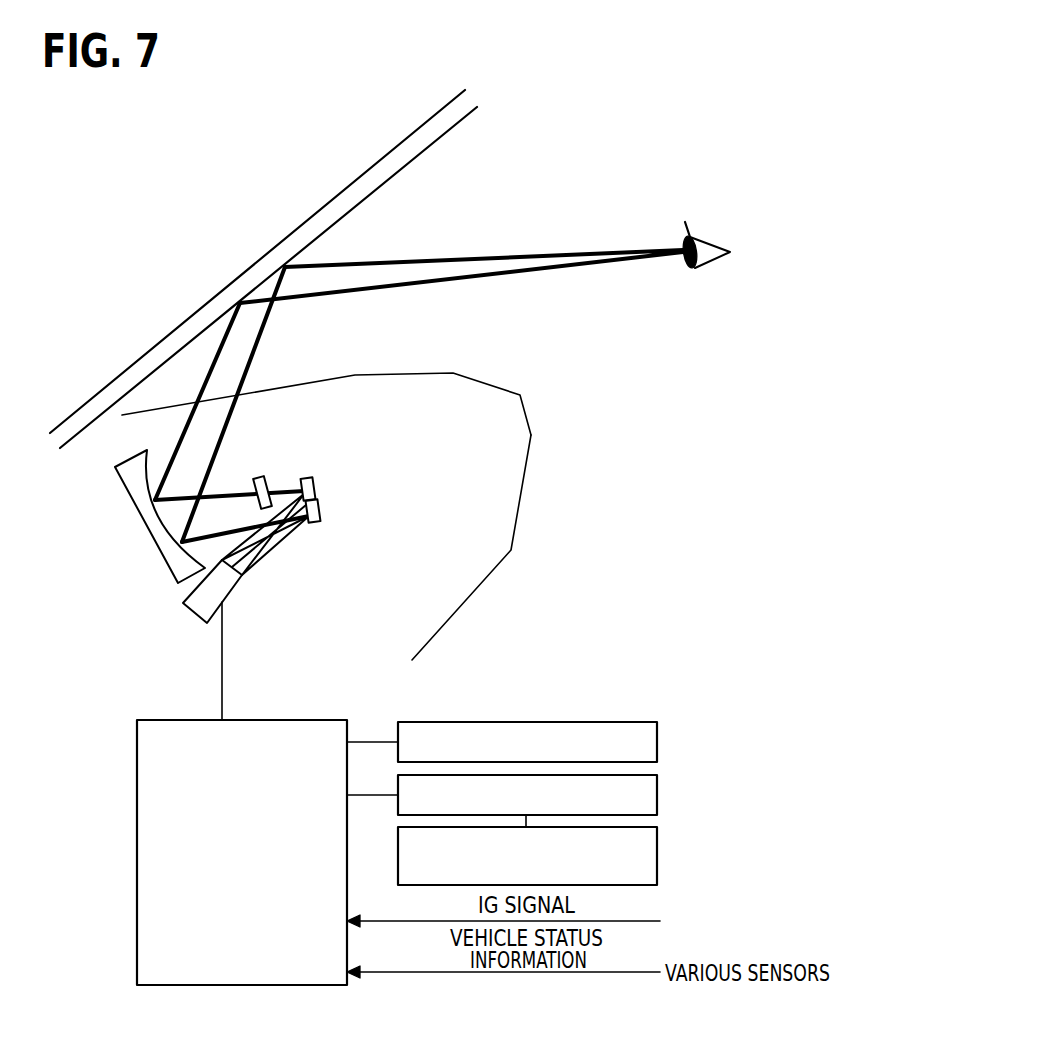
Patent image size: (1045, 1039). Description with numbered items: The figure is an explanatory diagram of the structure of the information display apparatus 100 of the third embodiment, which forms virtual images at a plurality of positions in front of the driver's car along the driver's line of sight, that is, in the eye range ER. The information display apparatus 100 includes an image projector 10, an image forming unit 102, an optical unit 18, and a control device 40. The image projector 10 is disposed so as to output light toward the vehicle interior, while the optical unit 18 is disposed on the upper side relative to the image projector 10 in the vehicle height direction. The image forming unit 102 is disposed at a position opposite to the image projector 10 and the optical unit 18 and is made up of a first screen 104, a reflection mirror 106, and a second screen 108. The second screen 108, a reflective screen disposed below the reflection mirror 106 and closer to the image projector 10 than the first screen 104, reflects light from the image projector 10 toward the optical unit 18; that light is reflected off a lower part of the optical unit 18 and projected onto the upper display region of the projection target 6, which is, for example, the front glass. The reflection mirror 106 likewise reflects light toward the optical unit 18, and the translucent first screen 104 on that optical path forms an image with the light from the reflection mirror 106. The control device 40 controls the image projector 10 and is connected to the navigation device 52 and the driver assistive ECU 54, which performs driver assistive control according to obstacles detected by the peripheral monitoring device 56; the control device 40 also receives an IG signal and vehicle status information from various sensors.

The projection target 6 is at (402, 142).
The eye range ER is at (715, 205).
The image projector 10 is at (190, 610).
The optical unit 18 is at (128, 492).
The control device 40 is at (137, 907).
The navigation device 52 is at (657, 742).
The driver assistive electronic control unit 54 is at (657, 795).
The peripheral monitoring device 56 is at (657, 855).
The information display apparatus 100 is at (397, 433).
The image forming unit 102 is at (397, 544).
The first screen 104 is at (264, 474).
The reflection mirror 106 is at (314, 482).
The second screen 108 is at (320, 513).